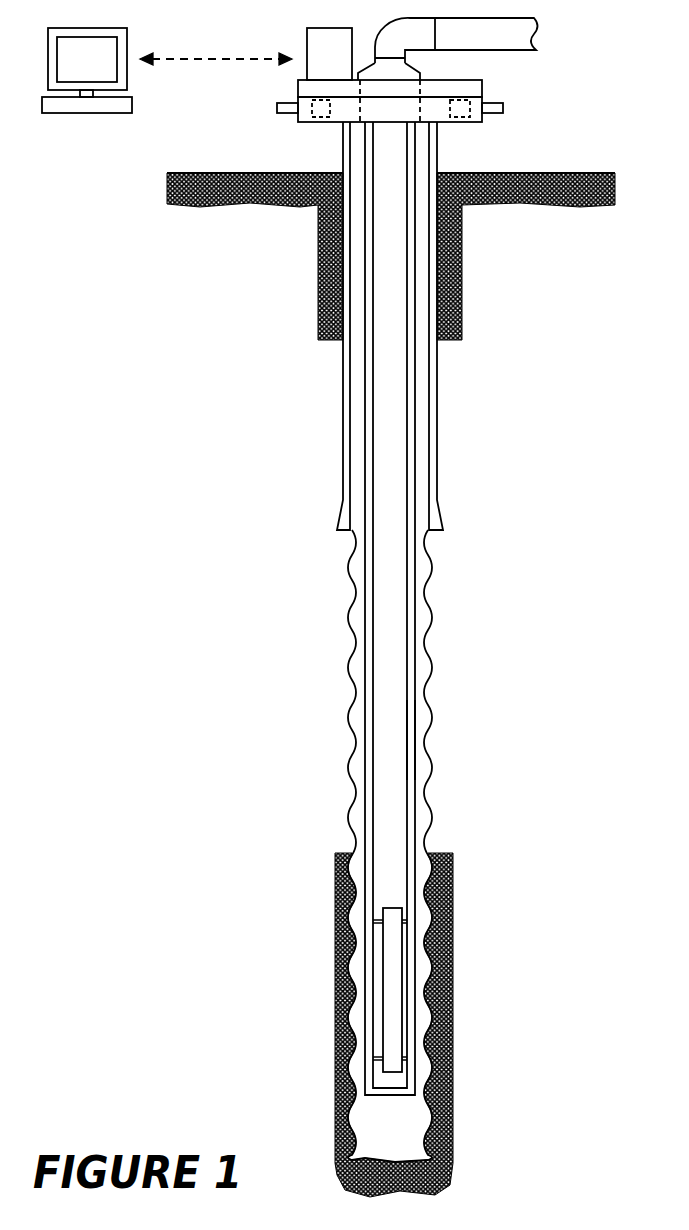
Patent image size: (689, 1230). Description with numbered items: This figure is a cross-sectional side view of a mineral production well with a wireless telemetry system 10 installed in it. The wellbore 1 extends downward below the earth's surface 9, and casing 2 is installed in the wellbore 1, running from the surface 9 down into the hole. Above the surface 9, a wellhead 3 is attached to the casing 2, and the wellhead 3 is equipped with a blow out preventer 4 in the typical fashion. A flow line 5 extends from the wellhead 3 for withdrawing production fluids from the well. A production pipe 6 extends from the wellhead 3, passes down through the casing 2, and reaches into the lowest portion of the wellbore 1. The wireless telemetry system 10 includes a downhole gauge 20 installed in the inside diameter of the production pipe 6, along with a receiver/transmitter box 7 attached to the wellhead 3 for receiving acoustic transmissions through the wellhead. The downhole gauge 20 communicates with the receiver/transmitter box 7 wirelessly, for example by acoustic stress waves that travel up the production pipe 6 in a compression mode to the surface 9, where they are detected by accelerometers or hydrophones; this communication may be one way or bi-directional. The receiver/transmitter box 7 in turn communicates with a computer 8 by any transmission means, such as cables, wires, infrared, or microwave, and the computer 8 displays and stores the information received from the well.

The wellbore 1 is at (430, 632).
The casing 2 is at (432, 382).
The wellhead 3 is at (468, 88).
The blow out preventer 4 is at (460, 112).
The flow line 5 is at (537, 40).
The production pipe 6 is at (409, 737).
The receiver/transmitter box 7 is at (318, 46).
The computer 8 is at (118, 105).
The surface 9 is at (585, 174).
The wireless telemetry system 10 is at (258, 687).
The downhole gauge 20 is at (390, 984).